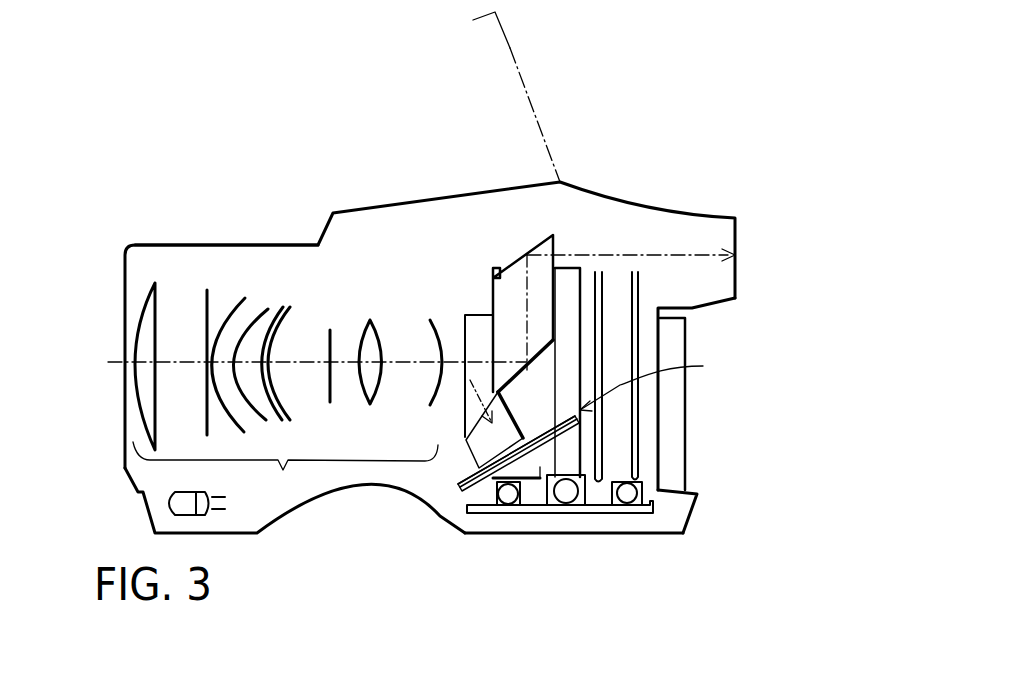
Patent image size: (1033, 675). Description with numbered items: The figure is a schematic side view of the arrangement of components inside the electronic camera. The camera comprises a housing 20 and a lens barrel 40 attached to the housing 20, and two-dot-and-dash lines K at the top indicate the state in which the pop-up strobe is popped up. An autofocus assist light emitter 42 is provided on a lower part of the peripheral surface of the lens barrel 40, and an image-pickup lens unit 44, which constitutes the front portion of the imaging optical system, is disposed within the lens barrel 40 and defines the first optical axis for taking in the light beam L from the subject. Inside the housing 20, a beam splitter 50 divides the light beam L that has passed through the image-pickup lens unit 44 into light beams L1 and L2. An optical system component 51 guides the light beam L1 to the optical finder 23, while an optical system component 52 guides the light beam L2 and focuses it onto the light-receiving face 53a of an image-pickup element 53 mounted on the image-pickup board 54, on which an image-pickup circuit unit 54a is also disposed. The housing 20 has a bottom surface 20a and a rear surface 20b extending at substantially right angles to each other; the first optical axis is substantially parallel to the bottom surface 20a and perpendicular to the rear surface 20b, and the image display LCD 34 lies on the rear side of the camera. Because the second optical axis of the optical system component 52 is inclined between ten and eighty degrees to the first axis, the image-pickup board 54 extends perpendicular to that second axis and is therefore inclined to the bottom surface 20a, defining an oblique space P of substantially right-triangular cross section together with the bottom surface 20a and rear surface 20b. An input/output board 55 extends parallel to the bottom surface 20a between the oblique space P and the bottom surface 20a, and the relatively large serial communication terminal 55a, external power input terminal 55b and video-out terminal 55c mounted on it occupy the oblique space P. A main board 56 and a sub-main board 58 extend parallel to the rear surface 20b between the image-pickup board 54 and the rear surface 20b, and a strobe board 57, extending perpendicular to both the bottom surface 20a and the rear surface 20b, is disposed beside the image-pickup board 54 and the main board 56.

The housing 20 is at (352, 211).
The bottom surface 20a is at (690, 536).
The rear surface 20b is at (660, 341).
The optical finder 23 is at (760, 241).
The image display LCD 34 is at (673, 398).
The lens barrel 40 is at (155, 242).
The autofocus assist light emitter 42 is at (175, 503).
The image-pickup lens unit 44 is at (287, 396).
The beam splitter 50 is at (475, 315).
The optical system component 51 is at (523, 262).
The optical system component 52 is at (466, 442).
The image-pickup element 53 is at (460, 487).
The light-receiving face 53a is at (468, 428).
The image-pickup board 54 is at (472, 478).
The image-pickup circuit unit 54a is at (666, 382).
The input/output board 55 is at (655, 506).
The serial communication terminal 55a is at (507, 497).
The external power input terminal 55b is at (567, 495).
The video-out terminal 55c is at (628, 496).
The main board 56 is at (600, 460).
The strobe board 57 is at (575, 268).
The sub-main board 58 is at (635, 428).
The two-dot-and-dash lines K is at (540, 112).
The light beam L is at (410, 360).
The light beam L1 is at (670, 250).
The light beam L2 is at (468, 380).
The oblique space P is at (541, 480).